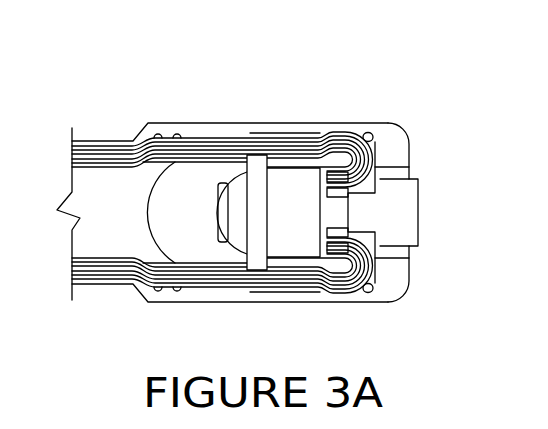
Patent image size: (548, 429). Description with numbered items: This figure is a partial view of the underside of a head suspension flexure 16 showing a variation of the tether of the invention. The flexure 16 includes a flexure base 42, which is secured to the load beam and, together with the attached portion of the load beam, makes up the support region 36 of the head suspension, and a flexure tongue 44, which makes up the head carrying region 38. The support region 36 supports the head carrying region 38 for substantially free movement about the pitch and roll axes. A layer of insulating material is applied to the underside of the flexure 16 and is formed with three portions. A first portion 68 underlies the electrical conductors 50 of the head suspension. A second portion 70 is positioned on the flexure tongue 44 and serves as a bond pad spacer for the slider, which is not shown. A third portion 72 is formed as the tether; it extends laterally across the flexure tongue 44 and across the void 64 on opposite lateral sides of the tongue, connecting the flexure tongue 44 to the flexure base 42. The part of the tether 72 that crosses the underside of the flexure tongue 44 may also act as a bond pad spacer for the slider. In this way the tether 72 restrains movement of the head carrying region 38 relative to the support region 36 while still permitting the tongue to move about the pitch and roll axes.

The flexure 16 is at (388, 142).
The support region 36 is at (100, 140).
The head carrying region 38 is at (205, 181).
The flexure base 42 is at (86, 185).
The flexure tongue 44 is at (208, 207).
The electrical conductors 50 is at (340, 143).
The void 64 is at (175, 217).
The first portion of insulating material 68 is at (345, 213).
The second portion of insulating material 70 is at (222, 185).
The tether 72 is at (257, 160).